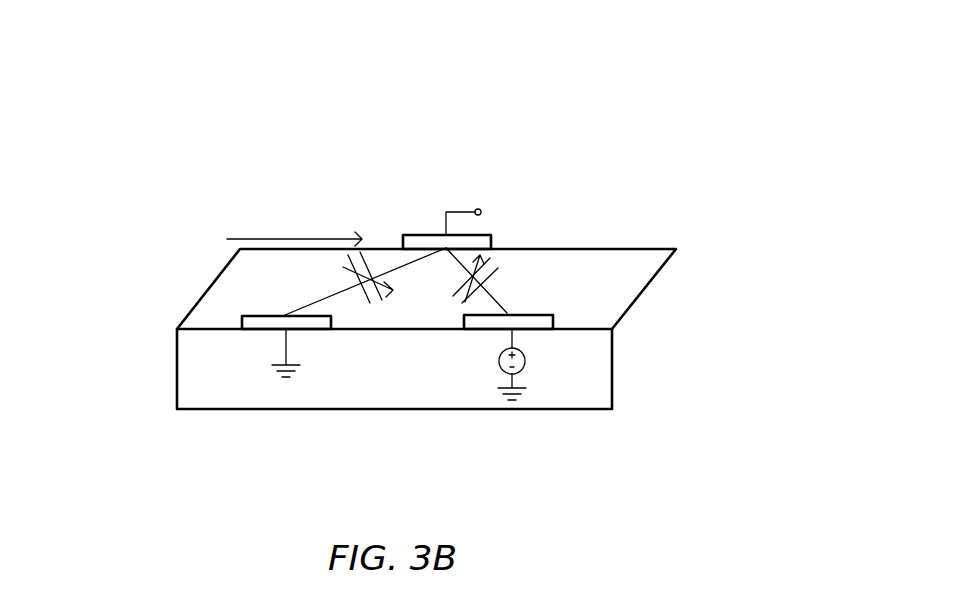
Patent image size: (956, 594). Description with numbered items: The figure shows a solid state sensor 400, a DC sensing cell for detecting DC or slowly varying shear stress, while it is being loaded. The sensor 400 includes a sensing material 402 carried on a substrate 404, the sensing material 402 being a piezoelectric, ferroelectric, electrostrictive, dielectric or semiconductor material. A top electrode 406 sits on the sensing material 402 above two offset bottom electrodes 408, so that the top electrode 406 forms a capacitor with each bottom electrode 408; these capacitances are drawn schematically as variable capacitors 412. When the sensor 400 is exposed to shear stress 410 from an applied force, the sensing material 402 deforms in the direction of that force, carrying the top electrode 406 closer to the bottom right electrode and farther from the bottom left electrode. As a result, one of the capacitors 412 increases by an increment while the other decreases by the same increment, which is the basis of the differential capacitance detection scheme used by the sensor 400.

The solid state sensor 400 is at (620, 90).
The sensing material 402 is at (222, 294).
The substrate 404 is at (230, 378).
The top electrode 406 is at (433, 243).
The bottom electrodes 408 is at (320, 320).
The shear stress 410 is at (285, 230).
The variable capacitors 412 is at (443, 290).